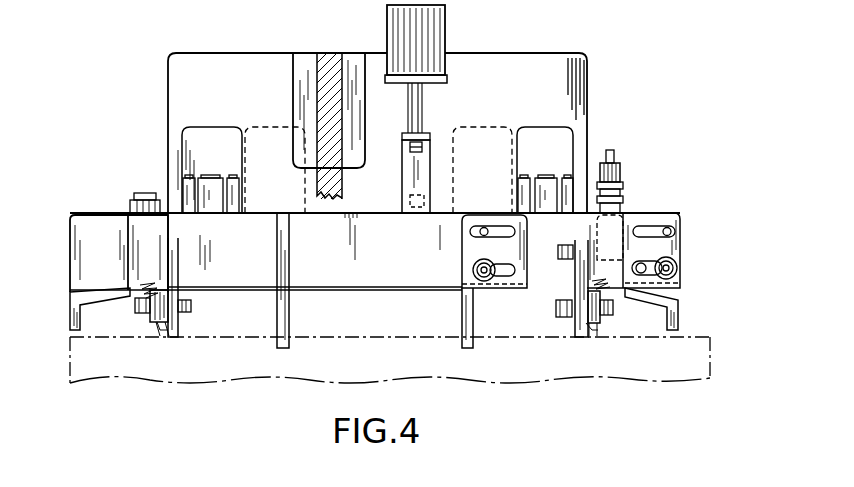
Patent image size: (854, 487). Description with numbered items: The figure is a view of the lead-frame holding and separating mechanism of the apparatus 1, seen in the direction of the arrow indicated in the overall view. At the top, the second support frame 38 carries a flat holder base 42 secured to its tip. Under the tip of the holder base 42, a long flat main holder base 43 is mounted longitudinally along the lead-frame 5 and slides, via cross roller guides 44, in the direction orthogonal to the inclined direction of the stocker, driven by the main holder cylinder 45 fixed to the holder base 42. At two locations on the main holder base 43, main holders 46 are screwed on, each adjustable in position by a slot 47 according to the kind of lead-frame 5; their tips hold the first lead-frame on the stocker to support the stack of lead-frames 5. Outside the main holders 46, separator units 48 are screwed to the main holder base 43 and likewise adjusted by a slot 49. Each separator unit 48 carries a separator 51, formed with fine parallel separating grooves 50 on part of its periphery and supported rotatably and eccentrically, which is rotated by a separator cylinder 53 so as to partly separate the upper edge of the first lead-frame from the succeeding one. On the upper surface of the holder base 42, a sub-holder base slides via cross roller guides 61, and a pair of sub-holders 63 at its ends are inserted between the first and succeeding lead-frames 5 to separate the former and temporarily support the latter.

The apparatus 1 is at (617, 67).
The lead-frame 5 is at (70, 372).
The second support frame 38 is at (300, 65).
The holder base 42 is at (537, 62).
The main holder base 43 is at (388, 286).
The cross roller guides 44 is at (208, 177).
The main holder cylinder 45 is at (440, 33).
The main holders 46 is at (283, 318).
The slot 47 is at (505, 276).
The separator units 48 is at (200, 318).
The slot 49 is at (650, 270).
The separating grooves 50 is at (180, 330).
The separator 51 is at (165, 328).
The separator cylinder 53 is at (624, 176).
The cross roller guides 61 is at (270, 127).
The sub-holders 63 is at (74, 316).